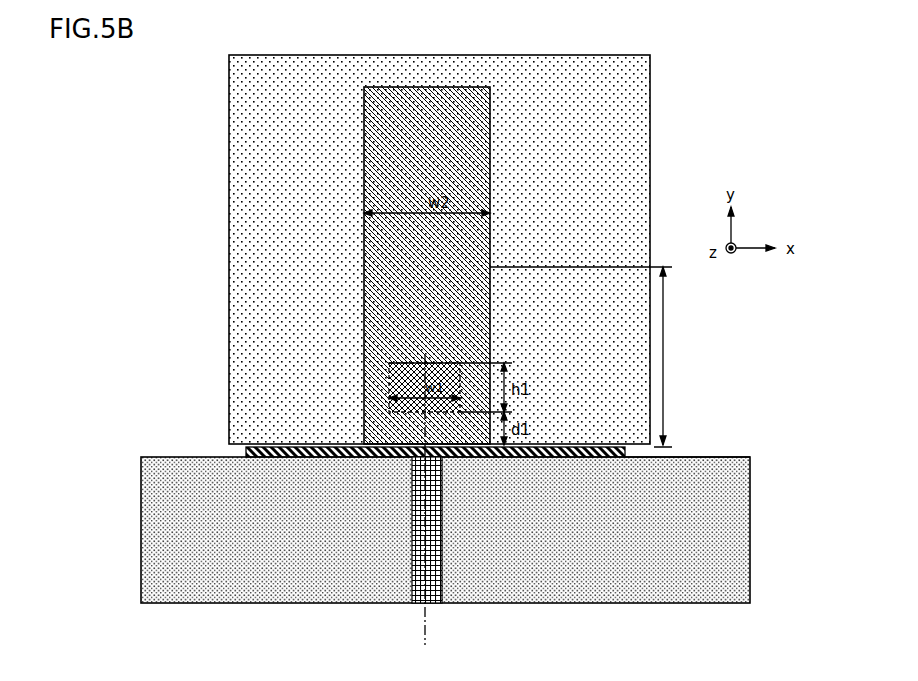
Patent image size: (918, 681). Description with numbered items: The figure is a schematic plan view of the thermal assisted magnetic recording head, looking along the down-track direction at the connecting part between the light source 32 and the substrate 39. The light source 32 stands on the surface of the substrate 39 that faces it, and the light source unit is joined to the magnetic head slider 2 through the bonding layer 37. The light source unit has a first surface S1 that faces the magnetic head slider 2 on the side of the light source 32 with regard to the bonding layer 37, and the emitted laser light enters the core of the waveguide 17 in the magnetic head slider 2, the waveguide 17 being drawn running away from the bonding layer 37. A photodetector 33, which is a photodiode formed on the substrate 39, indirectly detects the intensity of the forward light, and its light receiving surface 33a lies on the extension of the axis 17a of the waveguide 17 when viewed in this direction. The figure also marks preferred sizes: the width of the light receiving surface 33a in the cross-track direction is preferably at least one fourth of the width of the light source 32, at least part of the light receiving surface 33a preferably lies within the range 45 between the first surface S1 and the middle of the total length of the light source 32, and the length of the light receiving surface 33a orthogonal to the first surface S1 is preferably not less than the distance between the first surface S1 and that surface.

The magnetic head slider 2 is at (737, 518).
The waveguide 17 is at (440, 575).
The axis of waveguide 17a is at (420, 632).
The light source 32 is at (423, 87).
The photodetector 33 is at (389, 405).
The light receiving surface 33a is at (389, 373).
The bonding layer 37 is at (246, 452).
The substrate 39 is at (553, 85).
The range 45 is at (591, 357).
The first surface S1 is at (643, 457).